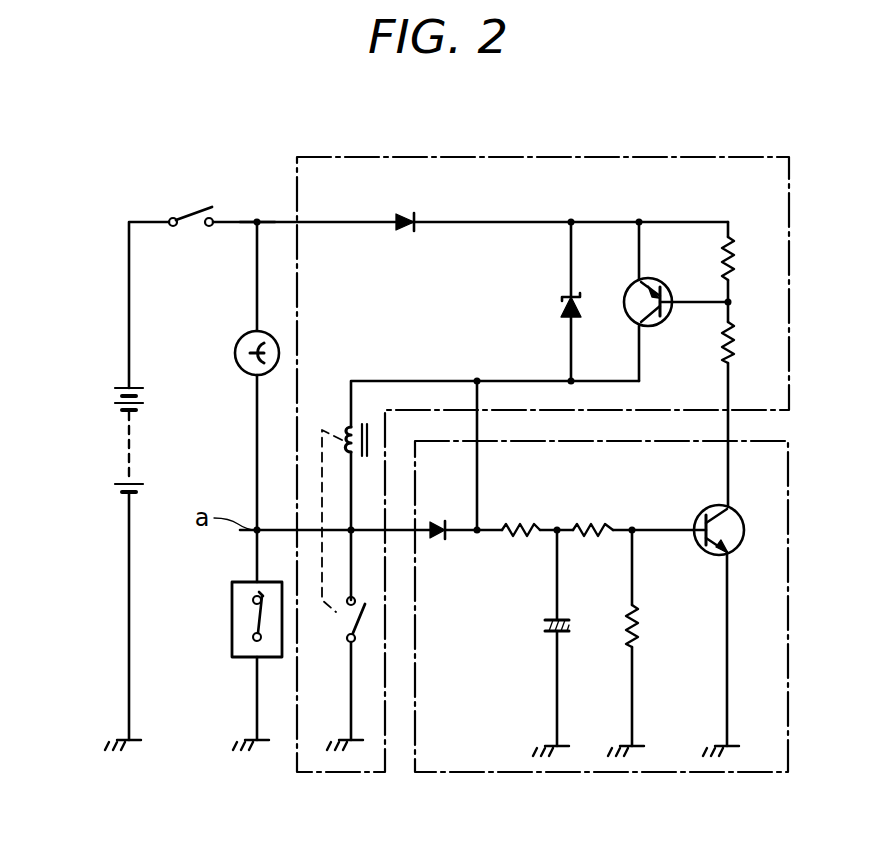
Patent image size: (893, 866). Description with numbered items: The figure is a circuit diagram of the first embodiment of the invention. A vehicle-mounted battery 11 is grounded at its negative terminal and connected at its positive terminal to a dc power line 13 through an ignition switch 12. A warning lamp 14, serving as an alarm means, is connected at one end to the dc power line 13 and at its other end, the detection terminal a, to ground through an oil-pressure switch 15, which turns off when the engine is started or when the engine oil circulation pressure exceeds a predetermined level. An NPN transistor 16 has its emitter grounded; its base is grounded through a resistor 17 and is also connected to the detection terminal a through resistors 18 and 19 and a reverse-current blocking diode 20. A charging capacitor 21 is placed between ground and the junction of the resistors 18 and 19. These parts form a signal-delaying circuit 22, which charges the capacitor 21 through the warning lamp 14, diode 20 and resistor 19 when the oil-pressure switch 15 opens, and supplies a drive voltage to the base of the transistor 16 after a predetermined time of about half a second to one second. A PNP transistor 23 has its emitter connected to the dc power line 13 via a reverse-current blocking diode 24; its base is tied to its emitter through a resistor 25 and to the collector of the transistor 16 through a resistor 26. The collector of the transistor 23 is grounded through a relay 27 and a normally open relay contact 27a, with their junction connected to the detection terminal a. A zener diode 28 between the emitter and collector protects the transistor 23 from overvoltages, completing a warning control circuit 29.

The battery 11 is at (128, 436).
The ignition switch 12 is at (199, 211).
The dc power line 13 is at (231, 220).
The warning lamp 14 is at (235, 355).
The oil-pressure switch 15 is at (232, 619).
The transistor 16 is at (744, 532).
The resistor 17 is at (640, 627).
The resistor 18 is at (598, 527).
The resistor 19 is at (520, 527).
The reverse-current blocking diode 20 is at (438, 534).
The charging capacitor 21 is at (545, 626).
The signal-delaying circuit 22 is at (439, 773).
The transistor 23 is at (654, 326).
The reverse-current blocking diode 24 is at (402, 228).
The resistor 25 is at (734, 256).
The resistor 26 is at (734, 334).
The relay 27 is at (344, 432).
The relay contact 27a is at (356, 630).
The zener diode 28 is at (564, 303).
The warning control circuit 29 is at (458, 157).